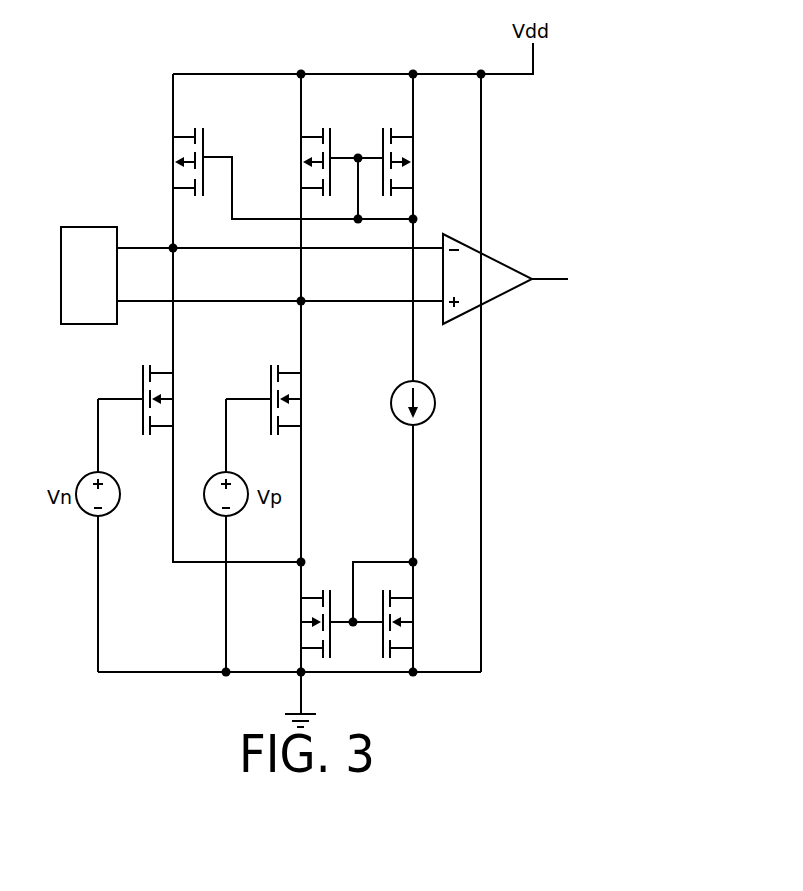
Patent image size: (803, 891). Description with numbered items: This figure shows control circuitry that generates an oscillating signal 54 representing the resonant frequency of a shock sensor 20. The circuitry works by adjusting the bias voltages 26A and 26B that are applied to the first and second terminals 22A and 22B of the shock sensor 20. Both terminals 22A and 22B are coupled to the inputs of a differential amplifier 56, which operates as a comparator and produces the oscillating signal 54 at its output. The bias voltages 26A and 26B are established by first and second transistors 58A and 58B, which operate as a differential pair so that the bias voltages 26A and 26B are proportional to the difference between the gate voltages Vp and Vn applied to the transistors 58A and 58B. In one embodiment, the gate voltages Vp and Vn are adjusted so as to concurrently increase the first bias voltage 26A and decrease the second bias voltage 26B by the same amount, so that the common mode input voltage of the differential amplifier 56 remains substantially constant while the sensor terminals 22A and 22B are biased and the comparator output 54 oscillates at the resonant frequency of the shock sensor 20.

The shock sensor 20 is at (92, 226).
The first terminal 22A is at (137, 303).
The second terminal 22B is at (137, 246).
The first bias voltage 26A is at (176, 322).
The second bias voltage 26B is at (304, 322).
The oscillating signal 54 is at (549, 278).
The differential amplifier 56 is at (492, 301).
The first transistor 58A is at (186, 381).
The second transistor 58B is at (311, 381).